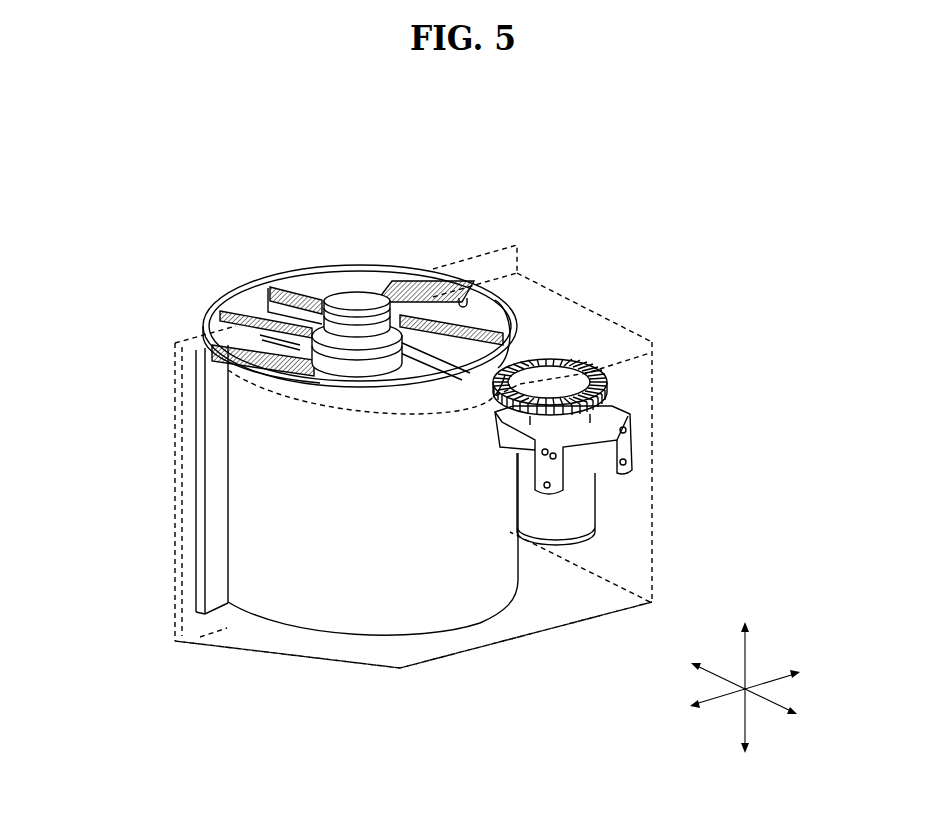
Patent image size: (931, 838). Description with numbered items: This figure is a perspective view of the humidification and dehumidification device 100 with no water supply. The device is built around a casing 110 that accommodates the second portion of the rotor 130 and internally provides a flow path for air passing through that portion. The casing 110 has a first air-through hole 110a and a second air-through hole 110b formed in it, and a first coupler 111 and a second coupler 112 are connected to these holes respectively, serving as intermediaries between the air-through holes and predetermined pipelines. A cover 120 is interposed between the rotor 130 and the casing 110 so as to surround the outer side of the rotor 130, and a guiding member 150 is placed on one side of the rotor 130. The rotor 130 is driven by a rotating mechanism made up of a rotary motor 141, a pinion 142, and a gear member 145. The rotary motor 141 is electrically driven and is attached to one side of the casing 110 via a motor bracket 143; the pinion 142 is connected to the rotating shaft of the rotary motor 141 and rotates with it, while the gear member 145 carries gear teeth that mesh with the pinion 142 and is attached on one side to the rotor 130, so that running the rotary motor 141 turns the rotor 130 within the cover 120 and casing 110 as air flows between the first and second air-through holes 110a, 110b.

The humidification and dehumidification device with no water supply 100 is at (78, 227).
The casing 110 is at (623, 345).
The first air-through hole 110a is at (334, 292).
The second air-through hole 110b is at (473, 624).
The first coupler 111 is at (352, 308).
The second coupler 112 is at (472, 626).
The cover 120 is at (222, 296).
The rotor 130 is at (500, 310).
The rotary motor 141 is at (575, 503).
The pinion 142 is at (620, 372).
The motor bracket 143 is at (625, 430).
The gear member 145 is at (507, 320).
The guiding member 150 is at (445, 298).